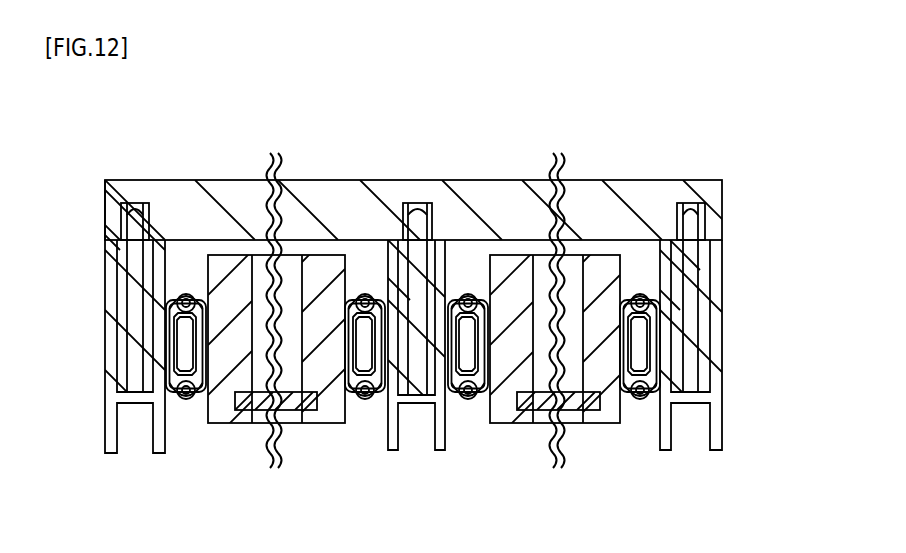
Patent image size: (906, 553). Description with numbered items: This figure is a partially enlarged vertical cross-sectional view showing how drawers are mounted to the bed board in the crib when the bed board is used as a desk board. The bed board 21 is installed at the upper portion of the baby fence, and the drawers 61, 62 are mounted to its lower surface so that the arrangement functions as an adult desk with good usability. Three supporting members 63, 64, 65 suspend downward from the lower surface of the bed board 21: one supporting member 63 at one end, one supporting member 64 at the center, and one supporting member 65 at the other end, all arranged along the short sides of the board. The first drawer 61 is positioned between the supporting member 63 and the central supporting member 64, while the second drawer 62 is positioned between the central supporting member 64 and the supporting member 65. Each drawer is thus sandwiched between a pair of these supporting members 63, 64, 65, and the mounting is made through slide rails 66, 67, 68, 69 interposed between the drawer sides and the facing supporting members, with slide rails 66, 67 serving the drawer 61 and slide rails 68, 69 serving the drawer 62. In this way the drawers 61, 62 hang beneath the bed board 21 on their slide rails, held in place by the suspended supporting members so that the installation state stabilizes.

The bed board 21 is at (402, 180).
The drawer 61 is at (228, 425).
The drawer 62 is at (518, 425).
The supporting member 63 is at (105, 312).
The supporting member 64 is at (437, 450).
The supporting member 65 is at (722, 322).
The slide rail 66 is at (182, 403).
The slide rail 67 is at (367, 403).
The slide rail 68 is at (467, 403).
The slide rail 69 is at (638, 403).